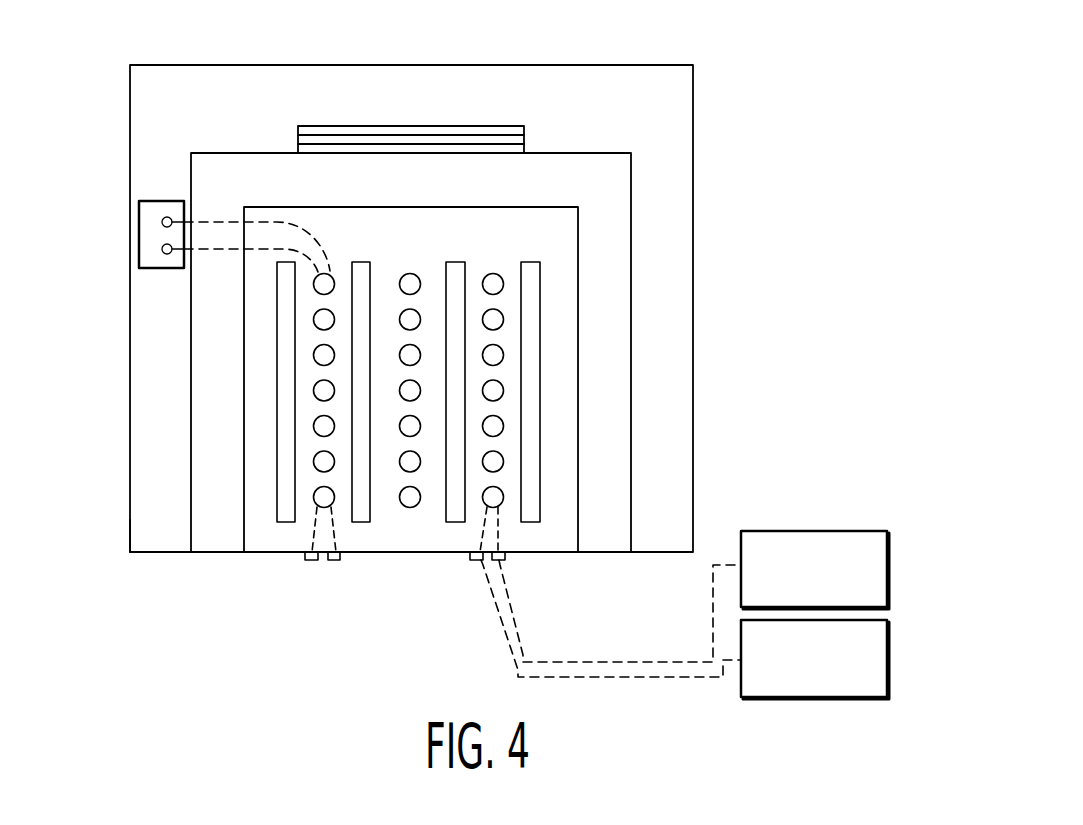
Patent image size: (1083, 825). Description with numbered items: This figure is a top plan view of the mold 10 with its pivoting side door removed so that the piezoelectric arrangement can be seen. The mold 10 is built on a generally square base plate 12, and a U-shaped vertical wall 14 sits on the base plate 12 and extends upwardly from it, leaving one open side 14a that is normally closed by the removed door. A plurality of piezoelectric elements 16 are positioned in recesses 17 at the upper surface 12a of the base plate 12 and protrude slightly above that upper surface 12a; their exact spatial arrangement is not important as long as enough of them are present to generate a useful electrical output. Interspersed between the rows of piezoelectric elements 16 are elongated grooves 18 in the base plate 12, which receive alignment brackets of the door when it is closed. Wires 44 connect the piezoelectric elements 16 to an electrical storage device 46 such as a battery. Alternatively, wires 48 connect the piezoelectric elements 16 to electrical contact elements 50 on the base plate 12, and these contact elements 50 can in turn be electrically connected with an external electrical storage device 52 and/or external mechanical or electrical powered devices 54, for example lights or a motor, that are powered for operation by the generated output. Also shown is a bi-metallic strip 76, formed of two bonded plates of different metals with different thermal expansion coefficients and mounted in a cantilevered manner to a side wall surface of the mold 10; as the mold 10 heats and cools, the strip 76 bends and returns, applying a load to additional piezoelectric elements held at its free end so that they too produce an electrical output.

The mold 10 is at (88, 97).
The base plate 12 is at (693, 143).
The upper surface of base plate 12a is at (142, 523).
The U-shaped vertical wall 14 is at (203, 445).
The open side of U-shaped vertical wall 14a is at (253, 542).
The piezoelectric elements 16 is at (313, 497).
The recesses 17 is at (455, 522).
The elongated grooves 18 is at (540, 522).
The wires 44 is at (212, 247).
The electrical storage device 46 is at (148, 232).
The wires 48 is at (497, 593).
The electrical contact elements 50 is at (335, 561).
The external electrical storage device 52 is at (765, 531).
The external powered devices 54 is at (741, 688).
The bi-metallic strip 76 is at (507, 125).